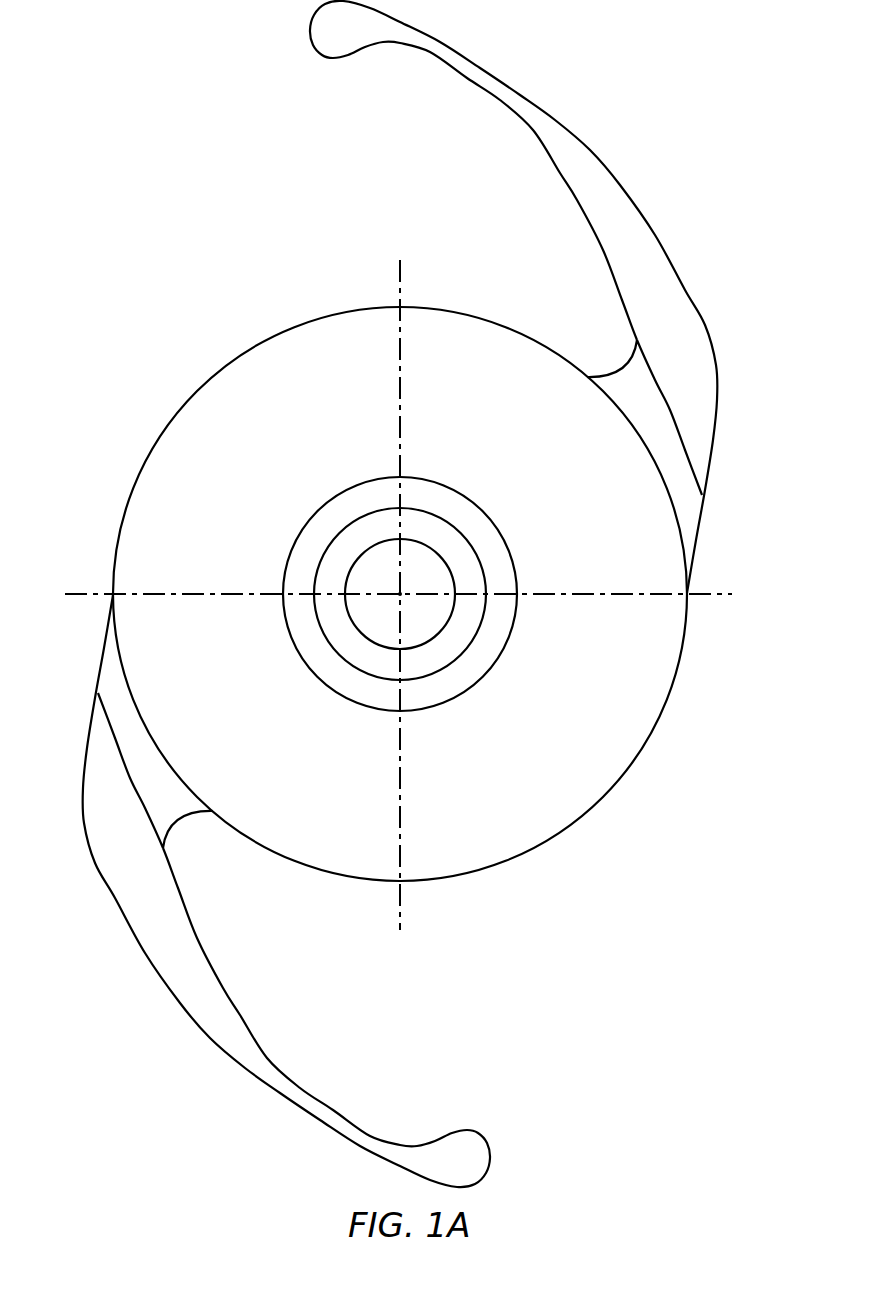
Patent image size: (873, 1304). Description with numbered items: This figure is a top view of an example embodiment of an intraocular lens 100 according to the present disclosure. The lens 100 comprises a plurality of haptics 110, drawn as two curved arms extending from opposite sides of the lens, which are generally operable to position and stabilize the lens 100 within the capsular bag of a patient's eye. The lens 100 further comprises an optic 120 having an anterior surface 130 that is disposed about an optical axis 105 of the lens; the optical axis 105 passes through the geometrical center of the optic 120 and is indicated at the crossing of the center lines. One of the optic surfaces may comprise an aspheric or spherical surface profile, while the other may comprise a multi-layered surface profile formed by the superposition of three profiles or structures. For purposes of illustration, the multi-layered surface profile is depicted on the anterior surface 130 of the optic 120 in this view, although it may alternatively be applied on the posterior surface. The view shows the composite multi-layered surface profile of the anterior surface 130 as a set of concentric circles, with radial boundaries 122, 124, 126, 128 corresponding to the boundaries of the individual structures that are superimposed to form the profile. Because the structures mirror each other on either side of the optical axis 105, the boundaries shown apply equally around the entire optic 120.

The intraocular lens 100 is at (247, 208).
The optical axis 105 is at (402, 594).
The haptics 110 is at (610, 200).
The optic 120 is at (678, 523).
The radial boundary 122 is at (352, 565).
The radial boundary 124 is at (353, 518).
The radial boundary 126 is at (360, 483).
The radial boundary 128 is at (316, 319).
The anterior surface 130 is at (201, 478).